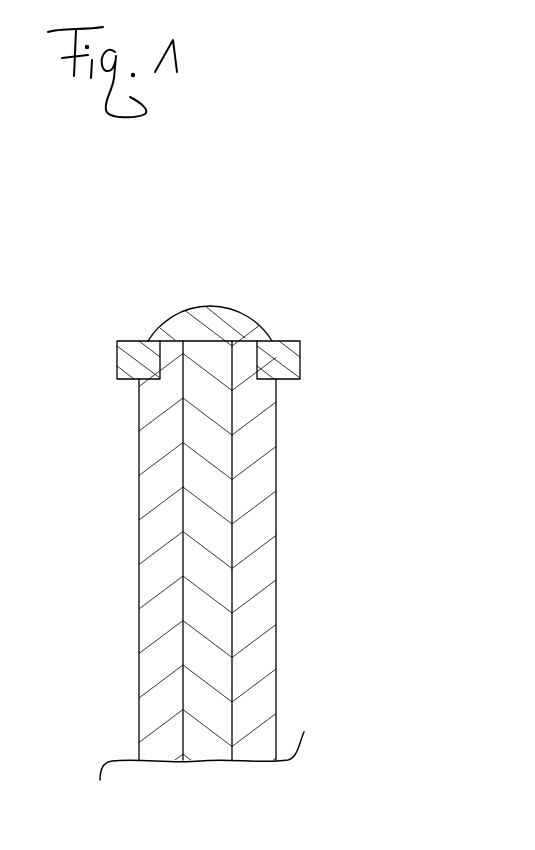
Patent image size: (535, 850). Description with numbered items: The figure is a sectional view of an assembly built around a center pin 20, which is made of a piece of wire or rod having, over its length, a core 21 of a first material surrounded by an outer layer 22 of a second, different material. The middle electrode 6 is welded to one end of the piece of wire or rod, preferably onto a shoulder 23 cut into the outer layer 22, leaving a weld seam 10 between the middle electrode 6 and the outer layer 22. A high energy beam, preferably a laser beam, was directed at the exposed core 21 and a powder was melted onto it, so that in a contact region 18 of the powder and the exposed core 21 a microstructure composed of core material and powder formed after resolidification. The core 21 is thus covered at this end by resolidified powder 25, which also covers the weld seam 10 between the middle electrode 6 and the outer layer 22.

The center pin 20 is at (253, 477).
The contact region of the powder and the exposed core 18 is at (201, 264).
The weld seam 10 is at (237, 307).
The resolidified powder 25 is at (287, 241).
The middle electrode 6 is at (300, 358).
The outer layer 22 is at (332, 569).
The core 21 is at (160, 548).
The shoulder 23 is at (87, 455).